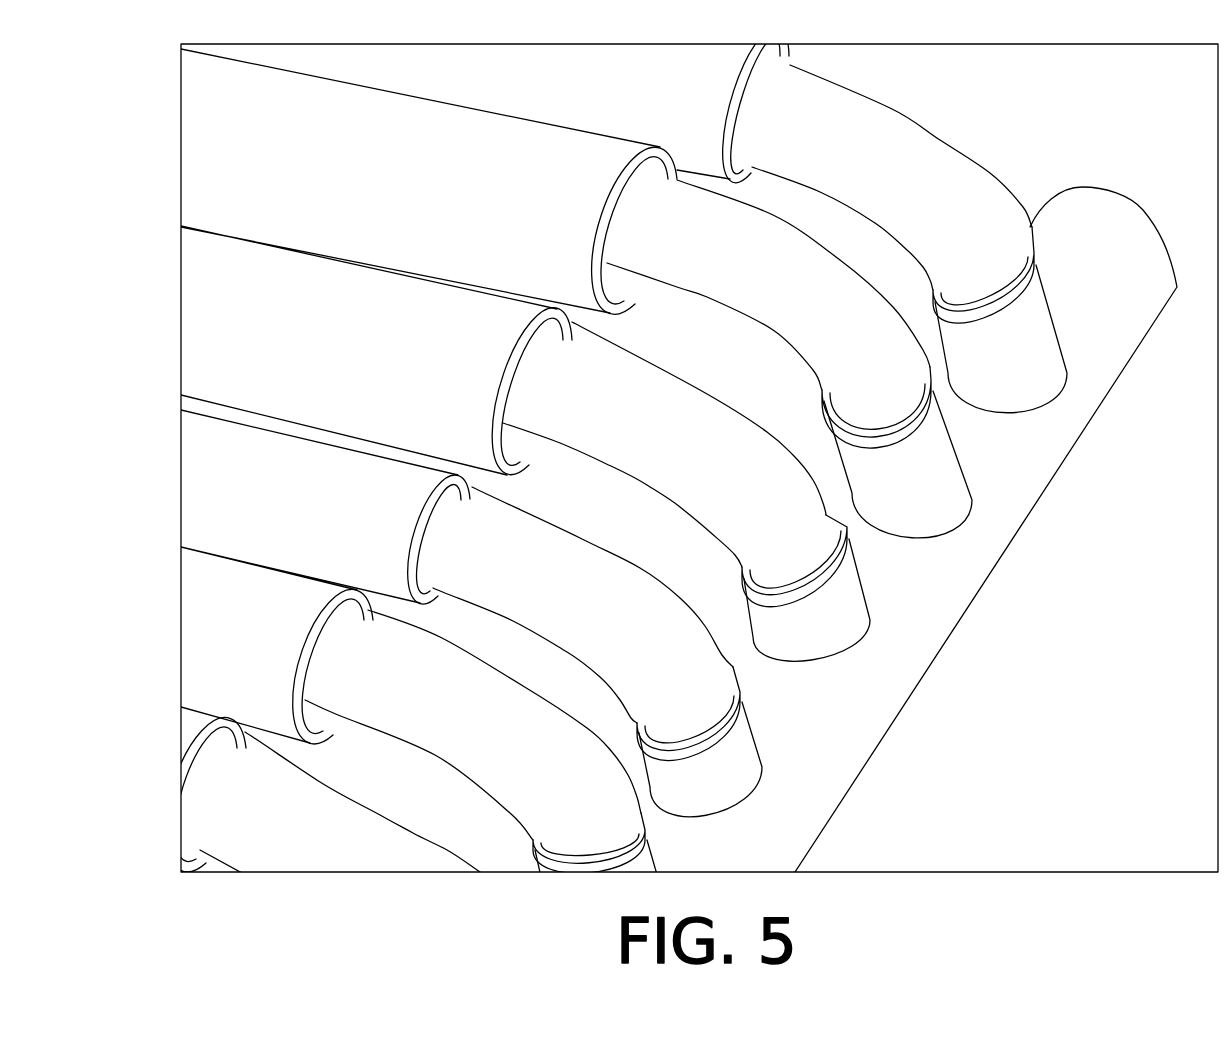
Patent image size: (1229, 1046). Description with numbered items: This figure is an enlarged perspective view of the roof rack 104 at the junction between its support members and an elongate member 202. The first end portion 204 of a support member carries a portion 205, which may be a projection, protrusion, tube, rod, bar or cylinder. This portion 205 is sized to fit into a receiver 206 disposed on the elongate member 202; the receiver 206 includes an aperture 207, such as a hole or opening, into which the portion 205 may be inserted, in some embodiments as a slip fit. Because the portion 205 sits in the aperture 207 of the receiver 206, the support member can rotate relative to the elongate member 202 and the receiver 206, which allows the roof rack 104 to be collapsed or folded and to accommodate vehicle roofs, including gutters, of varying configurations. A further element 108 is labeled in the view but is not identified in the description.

The roof rack 104 is at (938, 84).
The tube 108 is at (413, 482).
The elongate member 202 is at (1113, 222).
The first end portion 204 is at (986, 200).
The portion 205 is at (1020, 278).
The receiver 206 is at (1060, 350).
The aperture 207 is at (827, 533).